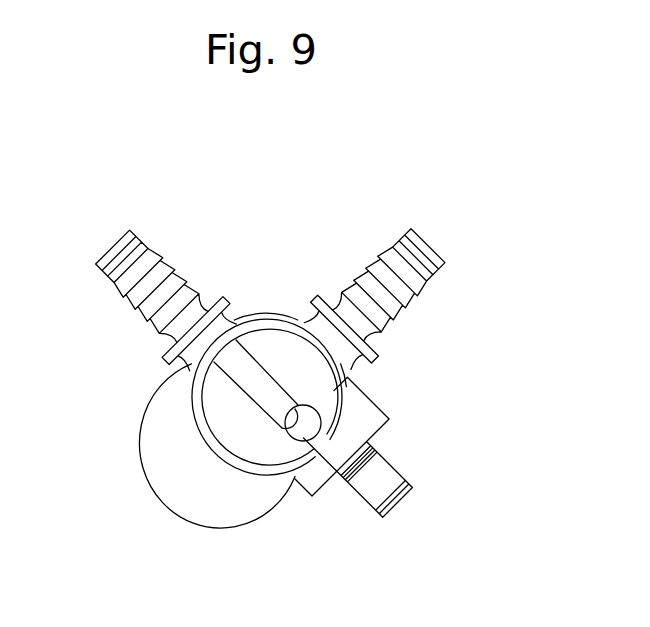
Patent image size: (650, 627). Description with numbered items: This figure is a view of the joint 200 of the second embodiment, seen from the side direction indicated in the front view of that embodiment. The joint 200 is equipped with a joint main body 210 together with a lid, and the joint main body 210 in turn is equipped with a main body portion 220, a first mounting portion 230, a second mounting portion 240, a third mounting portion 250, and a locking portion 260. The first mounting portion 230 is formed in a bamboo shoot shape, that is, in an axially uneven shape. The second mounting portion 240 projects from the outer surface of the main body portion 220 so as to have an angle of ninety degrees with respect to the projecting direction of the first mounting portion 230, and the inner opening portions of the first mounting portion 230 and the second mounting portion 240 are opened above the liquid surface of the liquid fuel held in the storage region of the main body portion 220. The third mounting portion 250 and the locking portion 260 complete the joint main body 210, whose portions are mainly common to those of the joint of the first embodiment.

The joint 200 is at (491, 275).
The joint main body 210 is at (192, 424).
The main body portion 220 is at (222, 458).
The first mounting portion 230 is at (128, 303).
The second mounting portion 240 is at (393, 247).
The third mounting portion 250 is at (170, 260).
The locking portion 260 is at (396, 463).